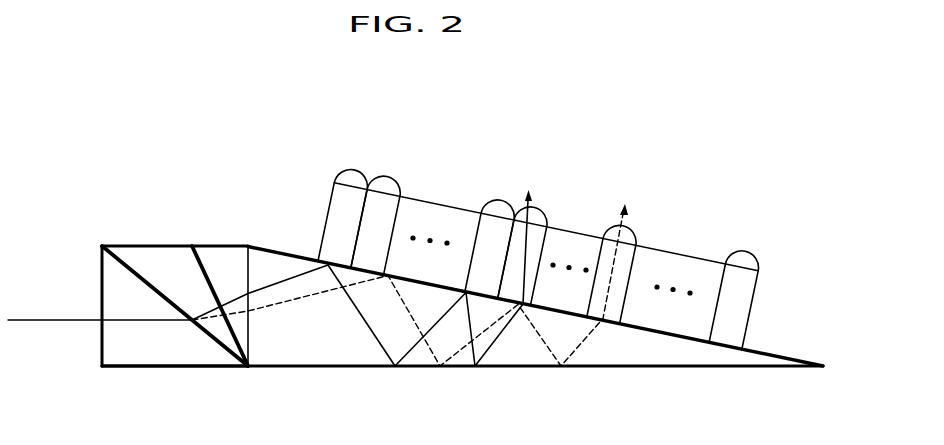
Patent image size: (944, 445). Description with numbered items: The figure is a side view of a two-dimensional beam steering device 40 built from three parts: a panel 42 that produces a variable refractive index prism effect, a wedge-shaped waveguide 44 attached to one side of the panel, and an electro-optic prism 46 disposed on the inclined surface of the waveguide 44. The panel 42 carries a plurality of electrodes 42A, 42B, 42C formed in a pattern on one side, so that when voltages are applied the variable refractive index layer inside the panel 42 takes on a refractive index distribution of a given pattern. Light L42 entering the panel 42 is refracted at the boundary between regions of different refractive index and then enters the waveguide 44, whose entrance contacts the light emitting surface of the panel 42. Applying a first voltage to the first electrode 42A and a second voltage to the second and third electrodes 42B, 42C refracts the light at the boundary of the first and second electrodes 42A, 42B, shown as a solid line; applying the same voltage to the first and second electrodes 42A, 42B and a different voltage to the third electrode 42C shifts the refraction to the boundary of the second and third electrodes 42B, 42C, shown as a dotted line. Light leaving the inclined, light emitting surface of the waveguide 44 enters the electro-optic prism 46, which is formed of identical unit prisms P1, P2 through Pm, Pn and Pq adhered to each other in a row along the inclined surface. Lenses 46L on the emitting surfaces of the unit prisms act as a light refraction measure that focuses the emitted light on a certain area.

The 2D beam steering device 40 is at (73, 185).
The panel 42 is at (248, 233).
The first electrode 42A is at (154, 363).
The second electrode 42B is at (145, 262).
The third electrode 42C is at (237, 273).
The light L42 is at (50, 323).
The waveguide 44 is at (330, 358).
The electro-optic prism 46 is at (695, 250).
The lenses 46L is at (399, 186).
The unit prism P1 is at (350, 192).
The unit prism P2 is at (382, 198).
The unit prism Pm is at (494, 220).
The unit prism Pn is at (627, 247).
The unit prism Pq is at (739, 270).